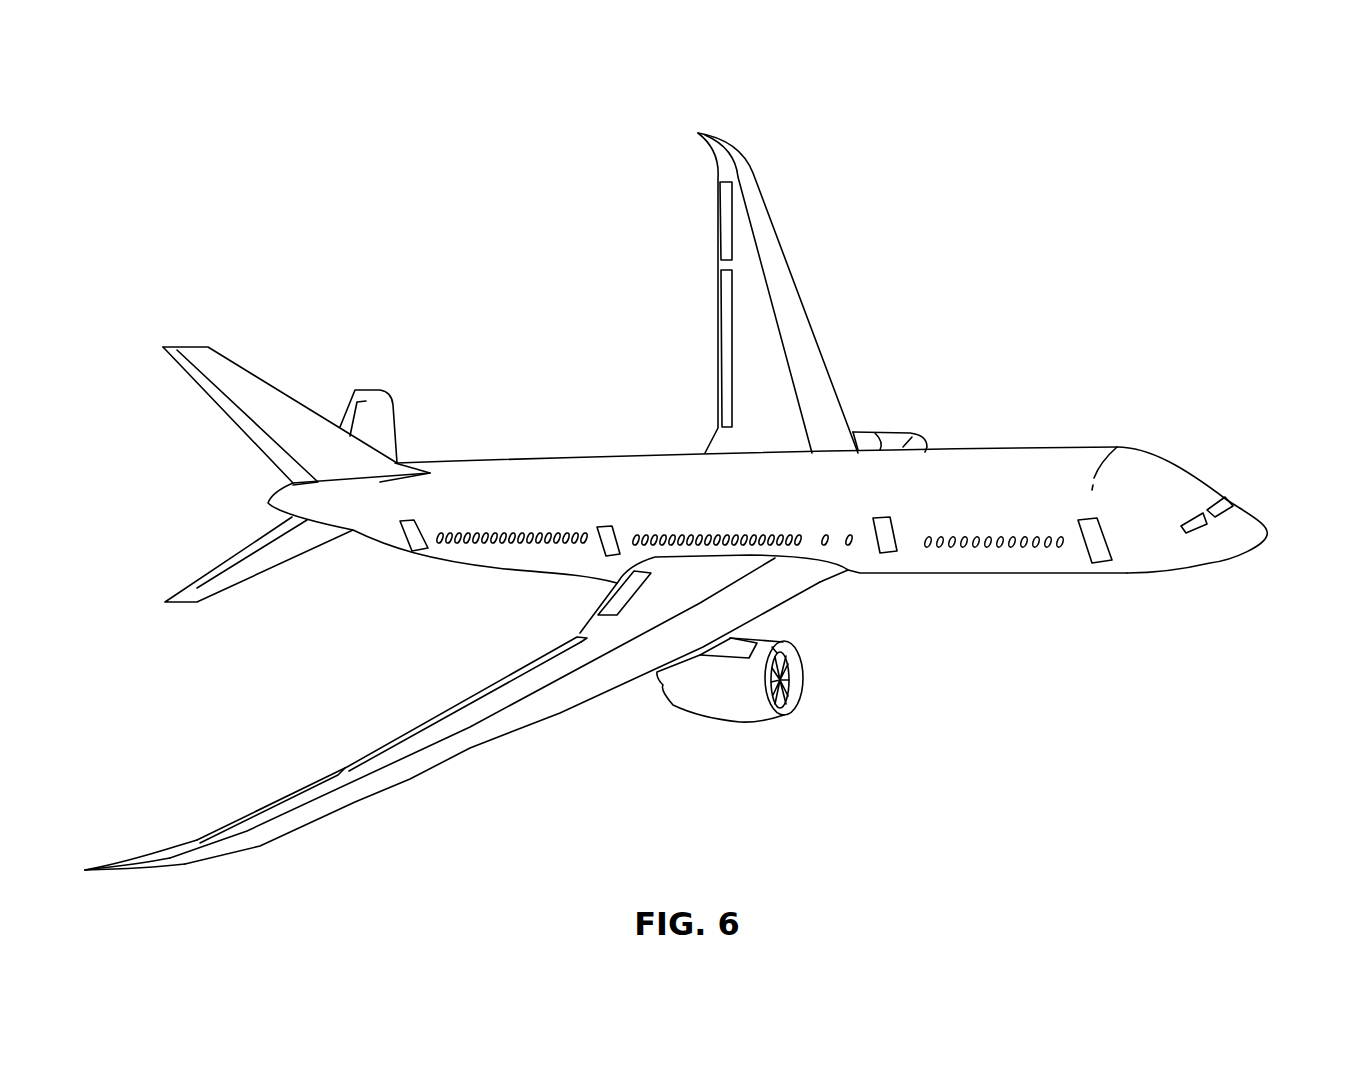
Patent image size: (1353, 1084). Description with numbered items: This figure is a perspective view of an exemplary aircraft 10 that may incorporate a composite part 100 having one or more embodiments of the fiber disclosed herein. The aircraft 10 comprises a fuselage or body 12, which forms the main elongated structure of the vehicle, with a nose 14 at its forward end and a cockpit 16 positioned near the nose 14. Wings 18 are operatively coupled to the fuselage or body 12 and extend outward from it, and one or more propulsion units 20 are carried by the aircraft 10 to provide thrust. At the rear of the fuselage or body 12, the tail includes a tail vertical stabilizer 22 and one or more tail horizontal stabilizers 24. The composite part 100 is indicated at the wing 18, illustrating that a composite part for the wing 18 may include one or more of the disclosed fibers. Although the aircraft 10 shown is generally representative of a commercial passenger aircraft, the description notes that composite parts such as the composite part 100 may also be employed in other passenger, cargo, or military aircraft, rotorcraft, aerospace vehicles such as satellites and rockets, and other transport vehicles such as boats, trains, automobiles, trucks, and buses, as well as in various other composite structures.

The aircraft 10 is at (1027, 246).
The fuselage or body 12 is at (990, 462).
The nose 14 is at (1243, 542).
The cockpit 16 is at (1228, 497).
The wings 18 is at (760, 215).
The propulsion units 20 is at (897, 433).
The tail vertical stabilizer 22 is at (253, 398).
The tail horizontal stabilizers 24 is at (380, 422).
The composite part 100 is at (140, 856).